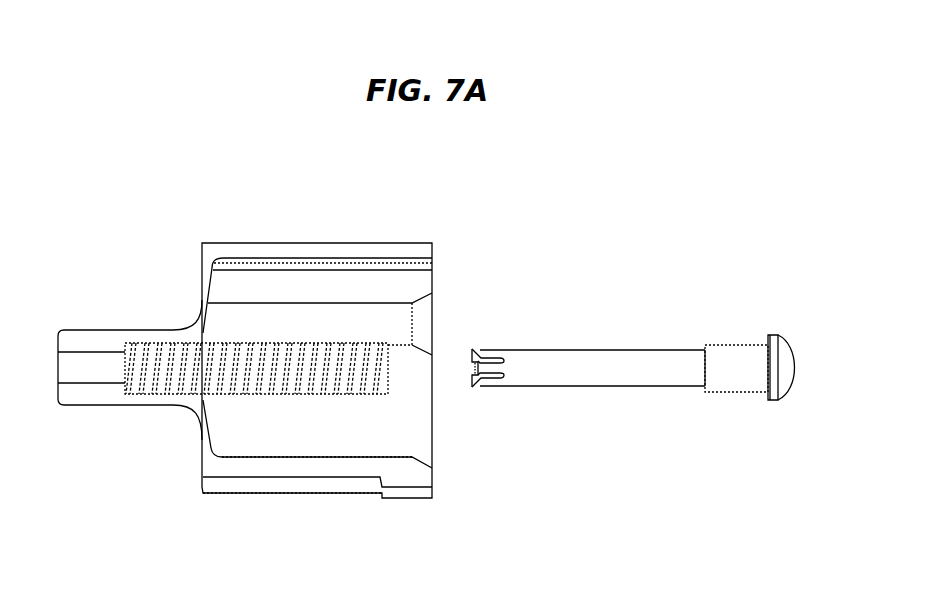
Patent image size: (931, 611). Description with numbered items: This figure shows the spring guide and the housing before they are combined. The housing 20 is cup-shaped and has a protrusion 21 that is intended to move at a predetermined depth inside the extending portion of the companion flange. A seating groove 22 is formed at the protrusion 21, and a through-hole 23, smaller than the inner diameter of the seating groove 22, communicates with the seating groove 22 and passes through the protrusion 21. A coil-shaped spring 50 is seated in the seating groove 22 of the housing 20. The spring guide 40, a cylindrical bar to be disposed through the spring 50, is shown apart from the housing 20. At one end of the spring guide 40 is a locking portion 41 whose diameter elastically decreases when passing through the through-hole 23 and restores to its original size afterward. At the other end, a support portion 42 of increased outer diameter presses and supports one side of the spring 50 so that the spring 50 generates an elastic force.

The housing 20 is at (297, 243).
The protrusion 21 is at (70, 330).
The seating groove 22 is at (158, 395).
The through-hole 23 is at (93, 372).
The spring 50 is at (170, 342).
The spring guide 40 is at (642, 373).
The locking portion 41 is at (477, 345).
The support portion 42 is at (785, 367).